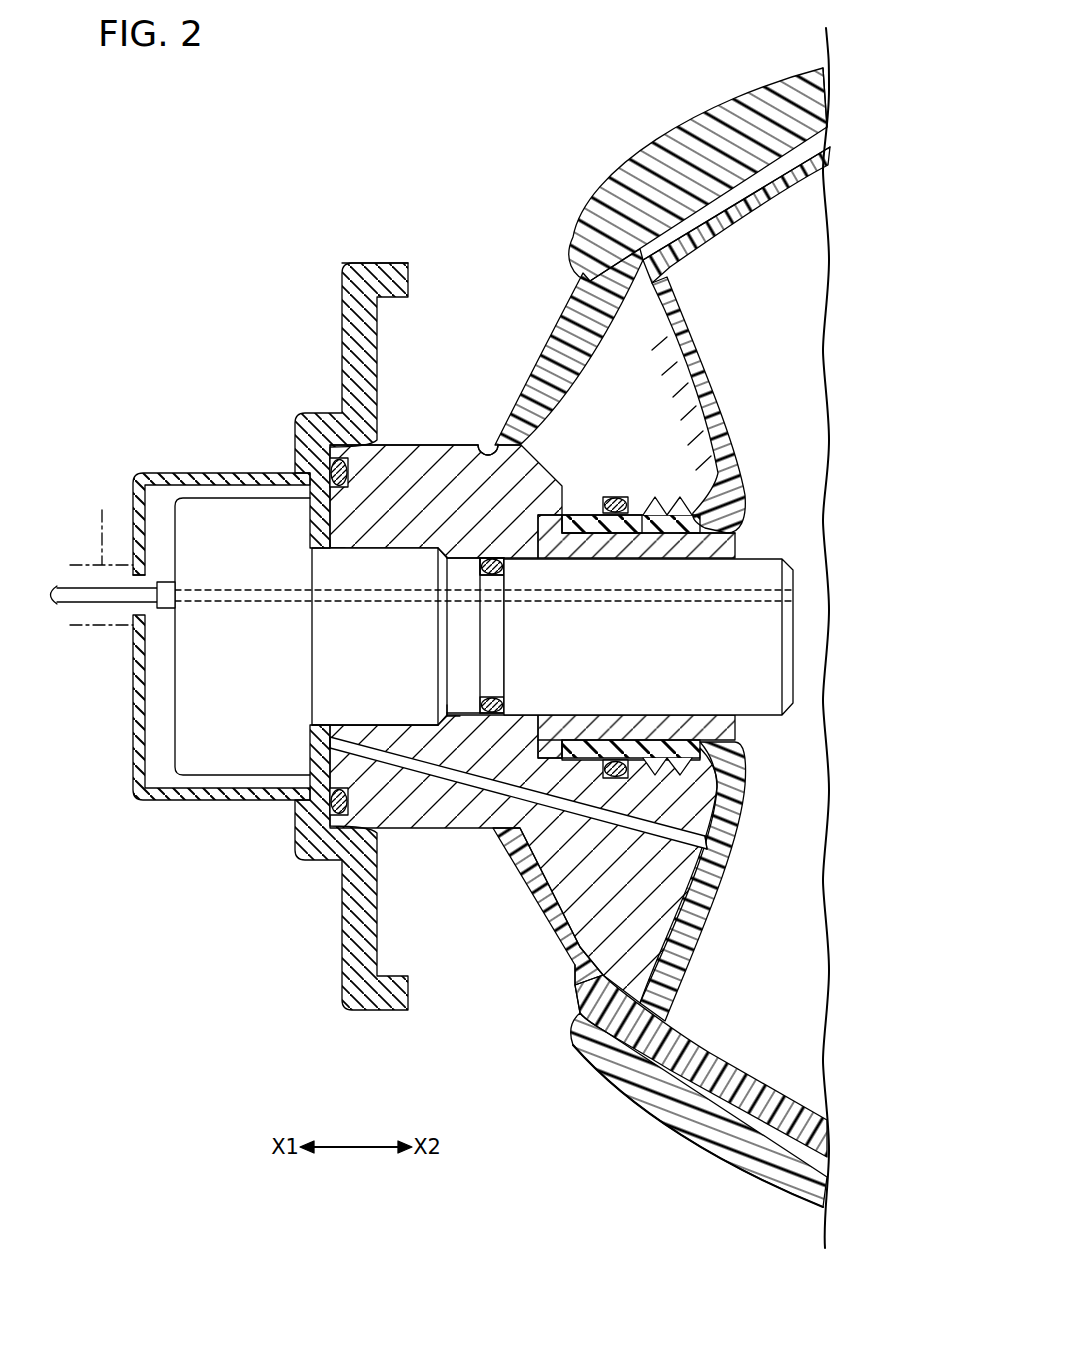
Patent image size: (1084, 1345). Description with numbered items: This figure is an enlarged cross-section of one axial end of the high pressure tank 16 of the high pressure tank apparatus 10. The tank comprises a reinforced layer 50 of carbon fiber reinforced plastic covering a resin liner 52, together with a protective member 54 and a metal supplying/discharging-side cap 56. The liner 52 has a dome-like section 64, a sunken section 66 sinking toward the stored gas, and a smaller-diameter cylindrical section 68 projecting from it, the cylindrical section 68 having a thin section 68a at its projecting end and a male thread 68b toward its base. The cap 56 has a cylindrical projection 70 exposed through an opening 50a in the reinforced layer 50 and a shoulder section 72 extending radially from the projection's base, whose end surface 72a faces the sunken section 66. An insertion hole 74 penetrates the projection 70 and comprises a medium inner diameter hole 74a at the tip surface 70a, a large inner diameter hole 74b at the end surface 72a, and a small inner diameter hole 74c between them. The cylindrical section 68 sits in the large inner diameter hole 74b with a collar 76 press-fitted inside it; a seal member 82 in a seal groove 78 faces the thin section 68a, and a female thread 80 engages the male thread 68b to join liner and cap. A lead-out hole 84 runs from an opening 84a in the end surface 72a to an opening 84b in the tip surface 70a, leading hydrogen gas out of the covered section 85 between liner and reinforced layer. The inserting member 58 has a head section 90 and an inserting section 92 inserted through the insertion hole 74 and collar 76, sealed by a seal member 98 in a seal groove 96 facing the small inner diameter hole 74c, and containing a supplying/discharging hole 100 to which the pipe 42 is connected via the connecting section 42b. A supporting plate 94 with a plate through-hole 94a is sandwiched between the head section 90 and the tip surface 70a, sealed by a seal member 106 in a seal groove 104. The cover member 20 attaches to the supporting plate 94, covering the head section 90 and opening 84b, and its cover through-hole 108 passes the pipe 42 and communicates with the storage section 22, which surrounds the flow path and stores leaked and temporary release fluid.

The high pressure tank apparatus 10 is at (177, 194).
The high pressure tank 16 is at (711, 1167).
The cover member 20 is at (378, 262).
The storage section 22 is at (101, 555).
The pipe 42 is at (77, 592).
The connecting section 42b is at (166, 606).
The reinforced layer 50 is at (787, 162).
The opening 50a is at (490, 454).
The liner 52 is at (718, 232).
The protective member 54 is at (632, 175).
The supplying/discharging-side cap 56 is at (408, 445).
The inserting member 58 is at (166, 657).
The dome-like section 64 is at (737, 202).
The sunken section 66 is at (715, 391).
The cylindrical section 68 is at (578, 440).
The thin section 68a is at (585, 521).
The male thread 68b is at (660, 500).
The projection 70 is at (437, 444).
The tip surface 70a is at (335, 540).
The shoulder section 72 is at (577, 375).
The end surface 72a is at (677, 343).
The insertion hole 74 is at (350, 725).
The medium inner diameter hole 74a is at (383, 724).
The large inner diameter hole 74b is at (550, 752).
The small inner diameter hole 74c is at (463, 712).
The collar 76 is at (720, 551).
The seal groove 78 is at (625, 766).
The female thread 80 is at (683, 510).
The seal member 82 is at (610, 765).
The lead-out hole 84 is at (673, 836).
The opening 84a is at (712, 845).
The opening 84b is at (333, 745).
The covered section 85 is at (777, 1103).
The head section 90 is at (203, 510).
The inserting section 92 is at (770, 639).
The supporting plate 94 is at (397, 291).
The plate through-hole 94a is at (322, 518).
The seal groove 96 is at (487, 562).
The seal member 98 is at (493, 576).
The supplying/discharging hole 100 is at (727, 603).
The seal groove 104 is at (334, 800).
The seal member 106 is at (340, 812).
The cover through-hole 108 is at (143, 575).